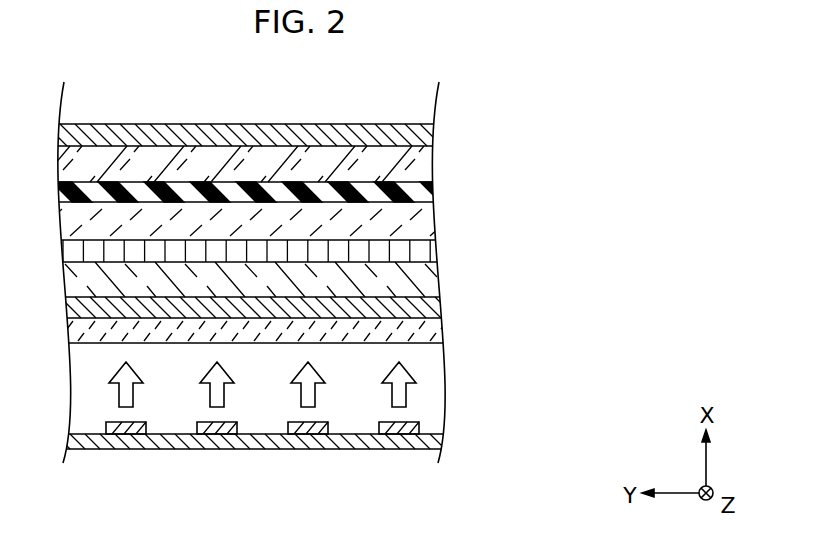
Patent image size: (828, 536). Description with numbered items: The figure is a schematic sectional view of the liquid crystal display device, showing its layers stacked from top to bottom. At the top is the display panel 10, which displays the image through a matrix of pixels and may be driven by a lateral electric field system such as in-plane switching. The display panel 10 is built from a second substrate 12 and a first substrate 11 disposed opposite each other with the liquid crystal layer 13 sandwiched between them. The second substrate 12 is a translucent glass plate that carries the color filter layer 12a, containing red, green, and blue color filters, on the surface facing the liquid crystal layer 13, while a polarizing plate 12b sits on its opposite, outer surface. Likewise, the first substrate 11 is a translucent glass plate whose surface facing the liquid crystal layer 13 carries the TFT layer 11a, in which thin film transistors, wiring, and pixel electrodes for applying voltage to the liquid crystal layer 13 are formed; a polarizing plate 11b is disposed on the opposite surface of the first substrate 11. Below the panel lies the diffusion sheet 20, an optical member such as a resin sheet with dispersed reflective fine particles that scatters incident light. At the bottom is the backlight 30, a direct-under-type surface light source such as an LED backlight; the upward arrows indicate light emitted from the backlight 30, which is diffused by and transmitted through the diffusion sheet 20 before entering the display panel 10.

The display panel 10 is at (319, 220).
The polarizing plate 12b is at (427, 131).
The second substrate 12 is at (424, 159).
The color filter (CF) layer 12a is at (427, 187).
The liquid crystal layer 13 is at (427, 218).
The thin film transistor (TFT) layer 11a is at (430, 245).
The first substrate 11 is at (433, 277).
The polarizing plate 11b is at (282, 307).
The diffusion sheet 20 is at (437, 333).
The backlight 30 is at (431, 421).